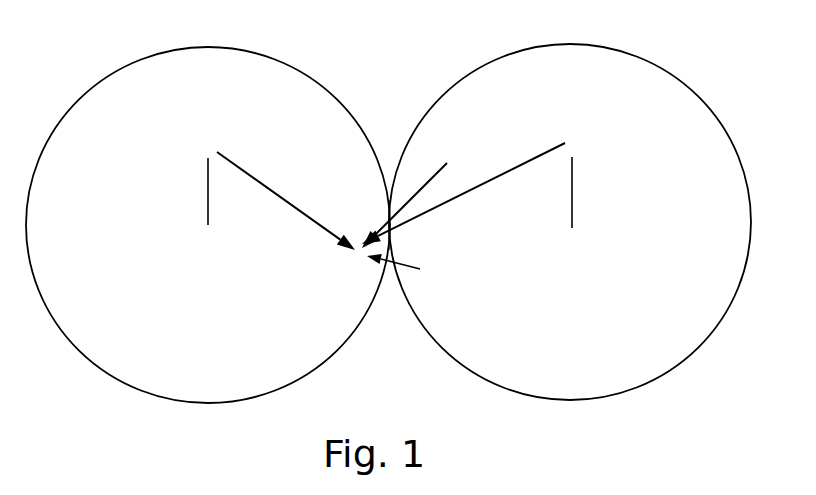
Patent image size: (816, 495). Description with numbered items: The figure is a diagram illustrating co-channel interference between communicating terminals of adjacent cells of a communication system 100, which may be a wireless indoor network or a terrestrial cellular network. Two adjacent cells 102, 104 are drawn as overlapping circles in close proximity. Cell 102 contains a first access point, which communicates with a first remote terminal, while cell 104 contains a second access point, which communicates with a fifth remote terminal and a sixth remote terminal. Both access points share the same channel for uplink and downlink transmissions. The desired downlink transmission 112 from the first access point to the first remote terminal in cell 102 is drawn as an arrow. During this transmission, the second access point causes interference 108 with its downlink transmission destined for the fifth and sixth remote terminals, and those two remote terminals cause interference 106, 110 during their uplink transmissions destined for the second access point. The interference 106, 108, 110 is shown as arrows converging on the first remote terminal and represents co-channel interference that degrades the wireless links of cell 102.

The communication system 100 is at (388, 94).
The cell 102 is at (272, 77).
The cell 104 is at (660, 82).
The interference 106 is at (378, 263).
The interference 108 is at (471, 192).
The interference 110 is at (441, 168).
The downlink transmission 112 is at (275, 193).